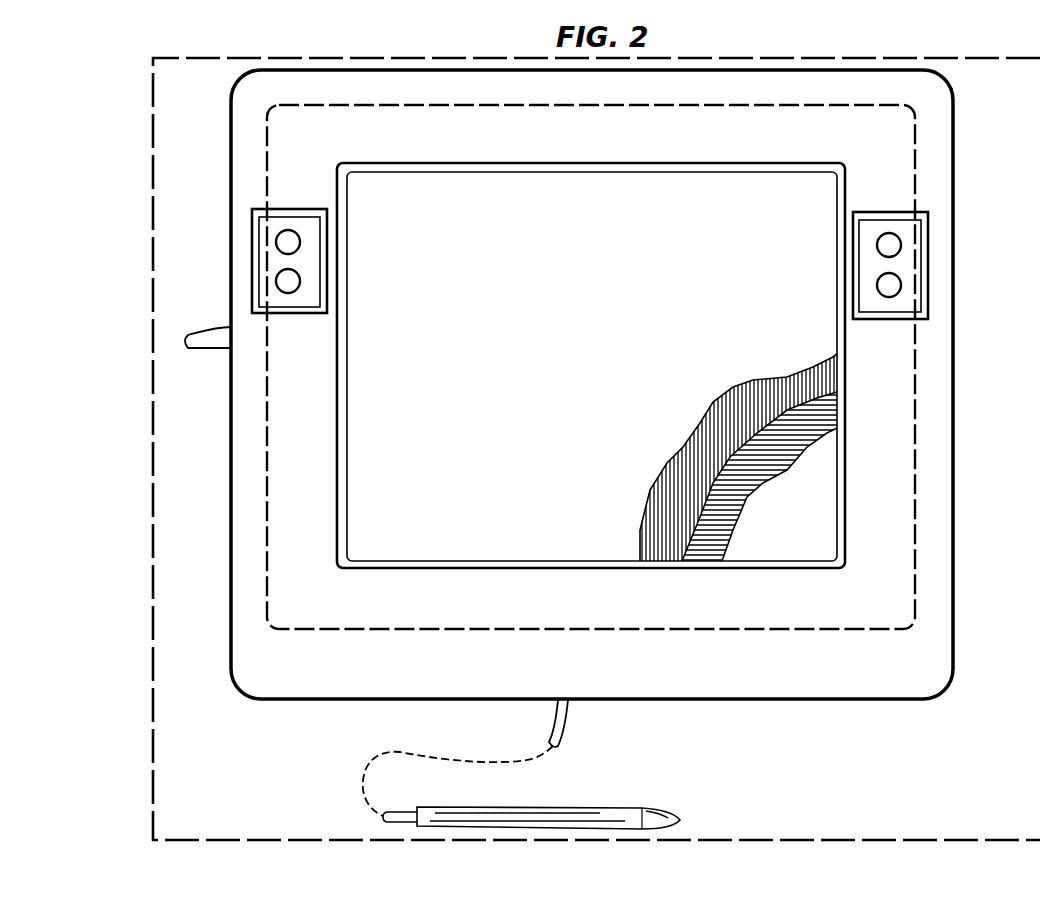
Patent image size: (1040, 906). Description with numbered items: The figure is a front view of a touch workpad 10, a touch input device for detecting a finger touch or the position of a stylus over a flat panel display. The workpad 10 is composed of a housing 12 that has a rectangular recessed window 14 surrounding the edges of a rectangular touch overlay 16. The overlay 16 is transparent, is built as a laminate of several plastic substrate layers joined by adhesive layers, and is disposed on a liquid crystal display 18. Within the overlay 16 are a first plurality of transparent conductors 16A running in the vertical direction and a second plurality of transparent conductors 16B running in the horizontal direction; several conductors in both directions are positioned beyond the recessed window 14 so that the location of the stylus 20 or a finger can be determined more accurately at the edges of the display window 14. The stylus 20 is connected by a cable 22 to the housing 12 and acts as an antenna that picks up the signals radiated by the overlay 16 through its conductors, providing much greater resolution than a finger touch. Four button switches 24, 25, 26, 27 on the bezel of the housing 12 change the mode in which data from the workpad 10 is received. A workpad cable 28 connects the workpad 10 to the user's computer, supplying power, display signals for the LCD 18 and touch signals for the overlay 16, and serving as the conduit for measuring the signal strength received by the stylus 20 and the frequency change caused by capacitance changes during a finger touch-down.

The workpad 10 is at (596, 450).
The housing 12 is at (229, 497).
The recessed window 14 is at (349, 406).
The touch overlay 16 is at (602, 378).
The first plurality of transparent conductors 16A is at (697, 437).
The second plurality of transparent conductors 16B is at (702, 533).
The liquid crystal display 18 is at (812, 531).
The stylus 20 is at (562, 807).
The cable 22 is at (567, 737).
The button switch 24 is at (885, 242).
The button switch 25 is at (889, 285).
The button switch 26 is at (288, 242).
The button switch 27 is at (288, 281).
The workpad cable 28 is at (205, 342).